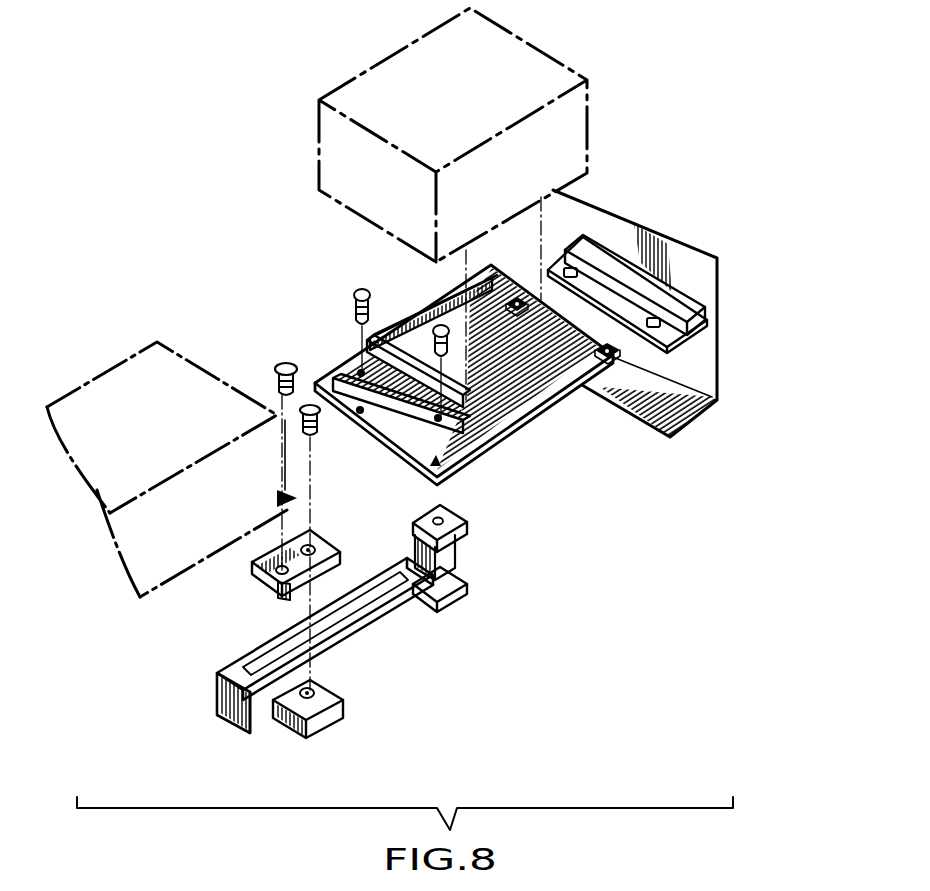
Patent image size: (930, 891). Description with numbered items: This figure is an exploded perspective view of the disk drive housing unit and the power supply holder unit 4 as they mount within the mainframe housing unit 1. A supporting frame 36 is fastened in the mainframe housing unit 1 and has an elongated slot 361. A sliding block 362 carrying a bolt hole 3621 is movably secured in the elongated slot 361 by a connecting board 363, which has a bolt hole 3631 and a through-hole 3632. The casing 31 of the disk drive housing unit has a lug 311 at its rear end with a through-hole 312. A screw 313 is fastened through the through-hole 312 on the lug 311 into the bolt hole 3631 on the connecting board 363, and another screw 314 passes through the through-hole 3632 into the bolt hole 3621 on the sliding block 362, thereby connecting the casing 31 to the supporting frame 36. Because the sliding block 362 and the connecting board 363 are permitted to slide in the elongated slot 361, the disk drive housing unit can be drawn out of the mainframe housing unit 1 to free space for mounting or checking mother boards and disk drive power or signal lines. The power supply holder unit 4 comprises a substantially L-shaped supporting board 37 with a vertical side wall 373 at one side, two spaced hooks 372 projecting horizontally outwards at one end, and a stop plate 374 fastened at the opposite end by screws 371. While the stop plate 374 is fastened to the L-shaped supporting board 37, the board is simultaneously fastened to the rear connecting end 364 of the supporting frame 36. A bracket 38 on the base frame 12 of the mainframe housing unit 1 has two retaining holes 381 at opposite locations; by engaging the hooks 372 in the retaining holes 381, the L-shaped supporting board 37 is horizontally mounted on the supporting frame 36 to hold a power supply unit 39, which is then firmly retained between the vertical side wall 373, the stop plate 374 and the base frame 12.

The mainframe housing unit 1 is at (735, 312).
The power supply holder unit 4 is at (293, 265).
The base frame 12 is at (697, 293).
The casing 31 is at (216, 480).
The lug 311 is at (298, 498).
The through-hole 312 is at (276, 497).
The screw 313 is at (282, 362).
The screw 314 is at (306, 403).
The supporting frame 36 is at (351, 653).
The elongated slot 361 is at (333, 620).
The sliding block 362 is at (350, 741).
The bolt hole 3621 is at (336, 703).
The connecting board 363 is at (281, 589).
The bolt hole 3631 is at (275, 588).
The through-hole 3632 is at (318, 549).
The rear connecting end 364 is at (468, 526).
The L-shaped supporting board 37 is at (464, 388).
The screw 371 is at (440, 324).
The hook 372 is at (522, 245).
The vertical side wall 373 is at (408, 327).
The stop plate 374 is at (456, 441).
The bracket 38 is at (669, 258).
The retaining hole 381 is at (687, 327).
The power supply unit 39 is at (577, 110).